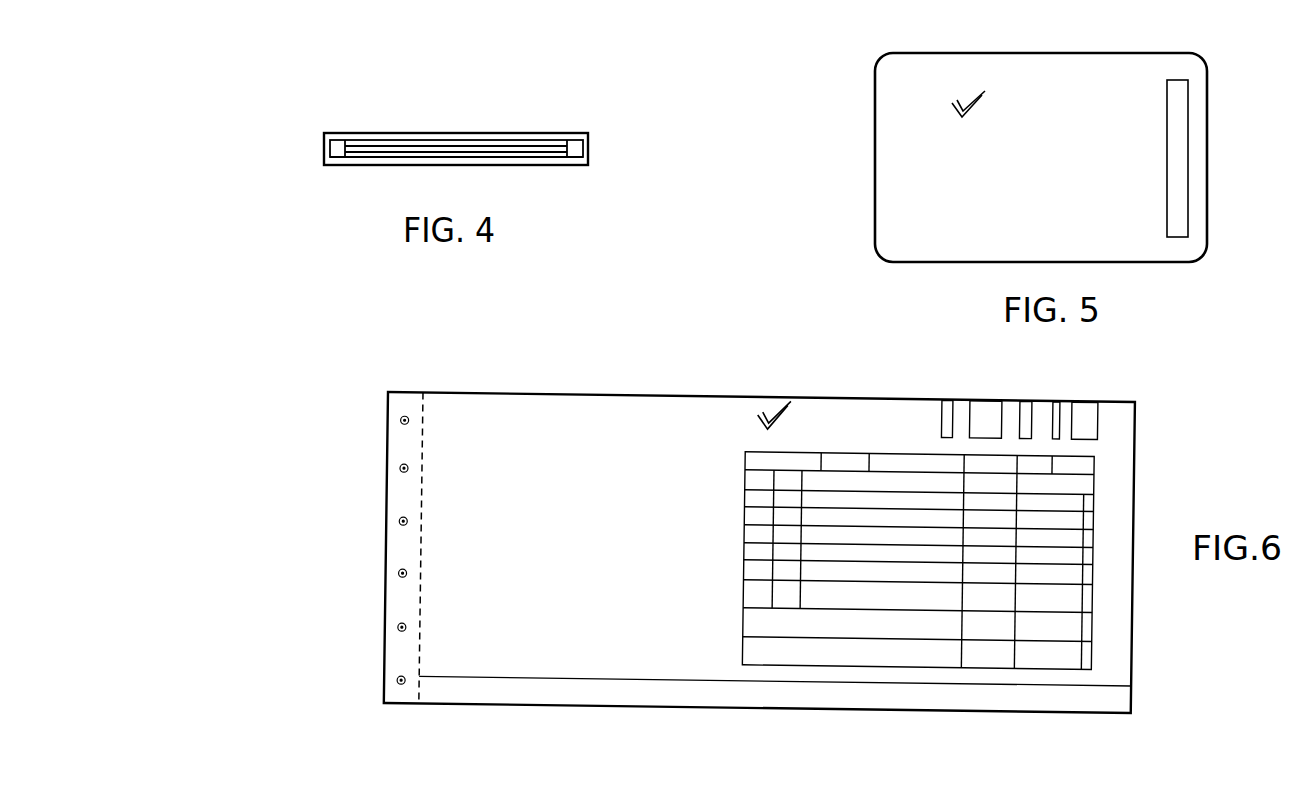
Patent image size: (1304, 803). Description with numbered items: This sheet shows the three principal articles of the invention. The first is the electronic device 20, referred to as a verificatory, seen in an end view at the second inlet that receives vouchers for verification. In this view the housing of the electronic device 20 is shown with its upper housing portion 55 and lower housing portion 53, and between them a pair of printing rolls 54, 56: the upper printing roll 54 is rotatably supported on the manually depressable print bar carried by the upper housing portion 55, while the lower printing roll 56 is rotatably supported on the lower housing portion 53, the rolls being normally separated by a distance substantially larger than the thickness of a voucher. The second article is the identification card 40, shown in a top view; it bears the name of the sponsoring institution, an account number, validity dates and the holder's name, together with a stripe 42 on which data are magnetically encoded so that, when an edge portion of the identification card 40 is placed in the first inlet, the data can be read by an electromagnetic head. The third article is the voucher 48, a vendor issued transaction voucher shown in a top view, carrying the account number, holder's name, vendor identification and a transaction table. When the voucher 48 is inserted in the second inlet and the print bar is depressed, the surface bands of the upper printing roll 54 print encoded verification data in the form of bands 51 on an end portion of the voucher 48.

In FIG. 4, the electronic device 20 is at (456, 119).
In FIG. 4, the lower housing portion 53 is at (477, 162).
In FIG. 4, the printing roll 54 is at (383, 145).
In FIG. 4, the upper housing portion 55 is at (413, 138).
In FIG. 4, the printing roll 56 is at (388, 154).
In FIG. 5, the identification card 40 is at (1022, 157).
In FIG. 5, the stripe 42 is at (1176, 124).
In FIG. 6, the voucher 48 is at (775, 516).
In FIG. 6, the bands 51 is at (1056, 395).